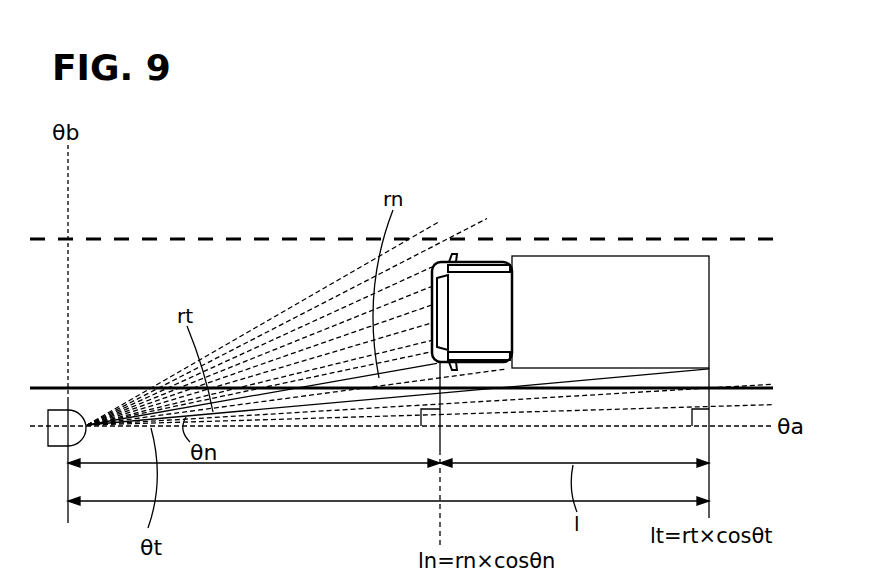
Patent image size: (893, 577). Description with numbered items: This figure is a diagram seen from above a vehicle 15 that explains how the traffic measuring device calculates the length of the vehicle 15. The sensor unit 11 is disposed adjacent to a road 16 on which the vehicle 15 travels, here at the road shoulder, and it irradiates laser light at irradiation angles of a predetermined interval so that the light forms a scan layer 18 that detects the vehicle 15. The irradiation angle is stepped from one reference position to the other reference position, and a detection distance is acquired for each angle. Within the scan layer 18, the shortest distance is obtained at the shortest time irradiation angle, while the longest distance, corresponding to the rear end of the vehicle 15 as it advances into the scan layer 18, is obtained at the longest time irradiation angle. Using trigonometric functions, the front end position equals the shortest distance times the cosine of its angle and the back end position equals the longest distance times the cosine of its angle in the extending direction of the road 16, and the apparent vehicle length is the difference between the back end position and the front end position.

The sensor unit 11 is at (55, 447).
The vehicle 15 is at (607, 275).
The road 16 is at (757, 255).
The scan layer 18 is at (268, 278).